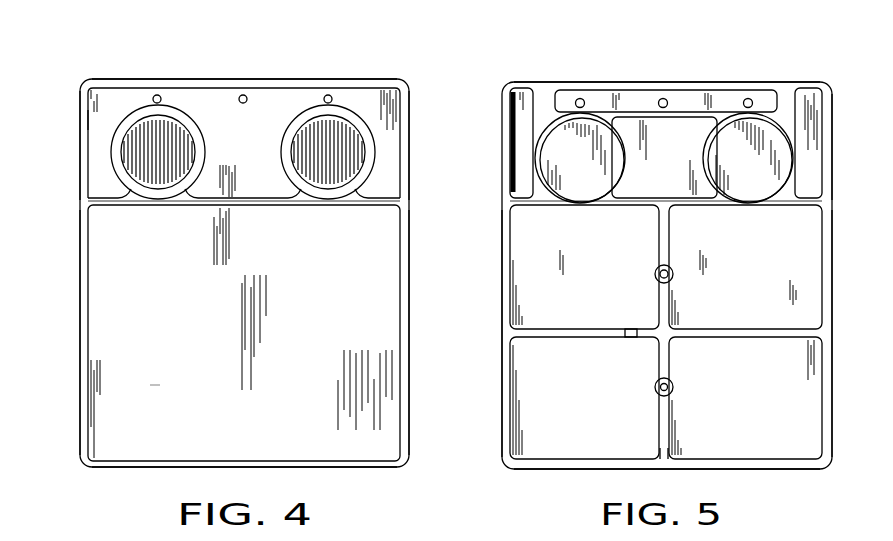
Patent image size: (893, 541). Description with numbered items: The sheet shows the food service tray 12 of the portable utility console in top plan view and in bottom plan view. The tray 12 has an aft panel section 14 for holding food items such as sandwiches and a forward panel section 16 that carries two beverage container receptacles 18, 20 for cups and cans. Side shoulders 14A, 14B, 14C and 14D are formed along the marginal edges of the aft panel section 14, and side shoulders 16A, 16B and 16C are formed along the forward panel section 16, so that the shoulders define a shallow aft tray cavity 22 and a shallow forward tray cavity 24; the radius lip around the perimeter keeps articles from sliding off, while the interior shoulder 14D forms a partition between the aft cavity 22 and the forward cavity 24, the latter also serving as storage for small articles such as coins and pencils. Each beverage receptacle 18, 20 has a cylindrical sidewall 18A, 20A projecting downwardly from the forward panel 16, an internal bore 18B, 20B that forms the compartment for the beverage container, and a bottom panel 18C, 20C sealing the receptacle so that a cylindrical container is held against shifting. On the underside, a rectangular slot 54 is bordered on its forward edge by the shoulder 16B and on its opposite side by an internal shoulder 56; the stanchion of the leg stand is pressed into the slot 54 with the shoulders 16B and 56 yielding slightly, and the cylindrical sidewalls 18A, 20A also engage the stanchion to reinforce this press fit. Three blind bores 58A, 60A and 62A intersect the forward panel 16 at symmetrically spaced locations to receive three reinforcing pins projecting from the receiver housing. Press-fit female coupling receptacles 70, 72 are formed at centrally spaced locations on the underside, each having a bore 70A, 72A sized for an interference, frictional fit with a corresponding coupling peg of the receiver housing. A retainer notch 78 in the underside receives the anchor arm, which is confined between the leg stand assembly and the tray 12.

In FIG. 4, the tray 12 is at (424, 60).
In FIG. 5, the tray 12 is at (823, 62).
In FIG. 4, the aft panel section 14 is at (304, 378).
In FIG. 5, the aft panel section 14 is at (790, 413).
In FIG. 4, the side shoulder 14A is at (80, 350).
In FIG. 5, the side shoulder 14A is at (832, 250).
In FIG. 4, the side shoulder 14B is at (122, 467).
In FIG. 5, the side shoulder 14B is at (776, 472).
In FIG. 4, the side shoulder 14C is at (410, 386).
In FIG. 5, the side shoulder 14C is at (503, 258).
In FIG. 4, the interior shoulder 14D is at (300, 222).
In FIG. 5, the interior shoulder 14D is at (620, 206).
In FIG. 4, the forward panel section 16 is at (269, 150).
In FIG. 5, the forward panel section 16 is at (808, 187).
In FIG. 4, the side shoulder 16A is at (82, 98).
In FIG. 5, the side shoulder 16A is at (832, 123).
In FIG. 4, the side shoulder 16B is at (371, 80).
In FIG. 5, the side shoulder 16B is at (640, 82).
In FIG. 4, the side shoulder 16C is at (410, 126).
In FIG. 5, the side shoulder 16C is at (506, 150).
In FIG. 4, the beverage container receptacle 18 is at (111, 165).
In FIG. 5, the beverage container receptacle 18 is at (799, 165).
In FIG. 5, the cylindrical sidewall 18A is at (782, 126).
In FIG. 4, the internal bore 18B is at (181, 131).
In FIG. 4, the bottom panel 18C is at (152, 180).
In FIG. 5, the bottom panel 18C is at (750, 180).
In FIG. 4, the beverage container receptacle 20 is at (379, 157).
In FIG. 5, the beverage container receptacle 20 is at (531, 172).
In FIG. 5, the cylindrical sidewall 20A is at (545, 128).
In FIG. 4, the internal bore 20B is at (352, 130).
In FIG. 5, the bottom panel 20C is at (575, 170).
In FIG. 4, the aft tray cavity 22 is at (138, 386).
In FIG. 4, the forward tray cavity 24 is at (116, 115).
In FIG. 5, the rectangular slot 54 is at (692, 96).
In FIG. 5, the internal shoulder 56 is at (690, 118).
In FIG. 4, the blind bore 58A is at (158, 94).
In FIG. 5, the blind bore 58A is at (750, 98).
In FIG. 4, the blind bore 60A is at (246, 94).
In FIG. 5, the blind bore 60A is at (662, 98).
In FIG. 4, the blind bore 62A is at (331, 94).
In FIG. 5, the blind bore 62A is at (581, 98).
In FIG. 5, the coupling receptacle 70 is at (656, 389).
In FIG. 5, the bore 70A is at (673, 387).
In FIG. 5, the coupling receptacle 72 is at (673, 280).
In FIG. 5, the bore 72A is at (660, 283).
In FIG. 5, the retainer notch 78 is at (630, 337).